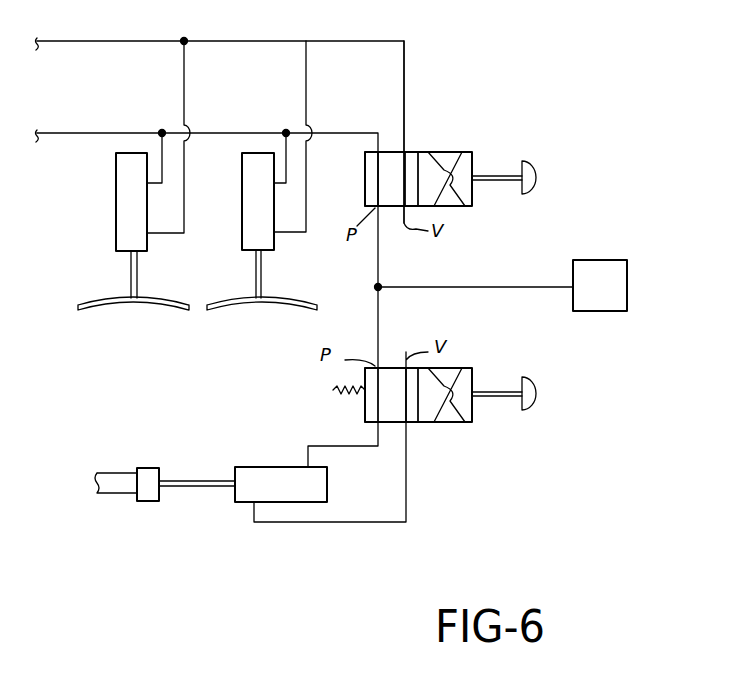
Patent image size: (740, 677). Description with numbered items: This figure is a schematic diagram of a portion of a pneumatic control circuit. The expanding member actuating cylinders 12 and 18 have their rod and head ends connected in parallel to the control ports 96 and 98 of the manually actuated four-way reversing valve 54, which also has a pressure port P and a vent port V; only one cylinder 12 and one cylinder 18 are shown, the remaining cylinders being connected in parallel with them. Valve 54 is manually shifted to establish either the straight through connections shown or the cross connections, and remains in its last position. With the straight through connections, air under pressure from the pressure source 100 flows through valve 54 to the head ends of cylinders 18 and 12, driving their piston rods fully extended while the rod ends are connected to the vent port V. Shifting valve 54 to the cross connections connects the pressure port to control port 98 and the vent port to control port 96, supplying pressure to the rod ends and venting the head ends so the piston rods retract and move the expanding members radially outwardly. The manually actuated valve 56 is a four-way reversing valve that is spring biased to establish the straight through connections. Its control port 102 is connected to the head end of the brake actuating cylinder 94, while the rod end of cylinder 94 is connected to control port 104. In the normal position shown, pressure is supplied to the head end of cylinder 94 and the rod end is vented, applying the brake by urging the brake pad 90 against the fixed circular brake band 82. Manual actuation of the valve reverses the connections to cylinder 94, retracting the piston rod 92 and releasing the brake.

The expanding member actuating cylinder 12 is at (250, 228).
The expanding member actuating cylinder 18 is at (122, 211).
The manually actuated four-way reversing valve 54 is at (460, 152).
The manually actuated valve 56 is at (445, 423).
The fixed circular brake band 82 is at (117, 495).
The brake pad 90 is at (157, 467).
The piston rod 92 is at (208, 488).
The brake actuating cylinder 94 is at (280, 450).
The control port 96 is at (378, 152).
The control port 98 is at (406, 152).
The pressure source 100 is at (618, 299).
The control port 102 is at (378, 423).
The control port 104 is at (406, 423).